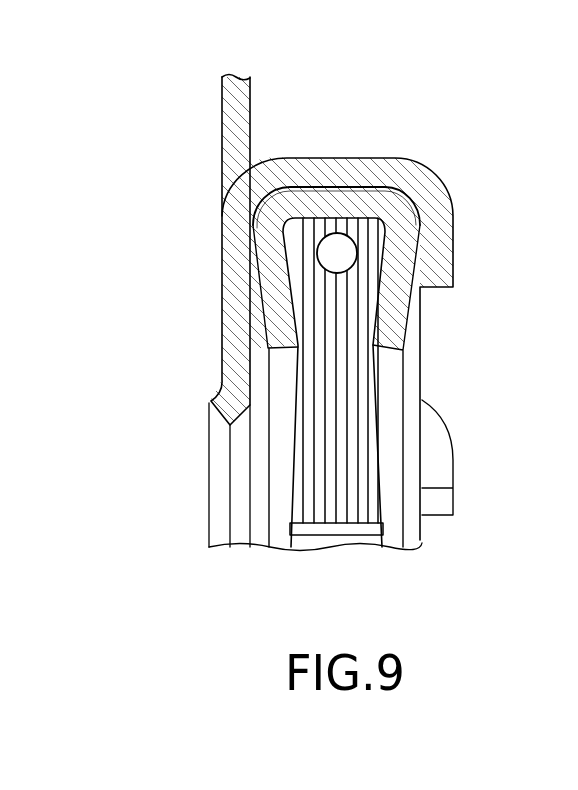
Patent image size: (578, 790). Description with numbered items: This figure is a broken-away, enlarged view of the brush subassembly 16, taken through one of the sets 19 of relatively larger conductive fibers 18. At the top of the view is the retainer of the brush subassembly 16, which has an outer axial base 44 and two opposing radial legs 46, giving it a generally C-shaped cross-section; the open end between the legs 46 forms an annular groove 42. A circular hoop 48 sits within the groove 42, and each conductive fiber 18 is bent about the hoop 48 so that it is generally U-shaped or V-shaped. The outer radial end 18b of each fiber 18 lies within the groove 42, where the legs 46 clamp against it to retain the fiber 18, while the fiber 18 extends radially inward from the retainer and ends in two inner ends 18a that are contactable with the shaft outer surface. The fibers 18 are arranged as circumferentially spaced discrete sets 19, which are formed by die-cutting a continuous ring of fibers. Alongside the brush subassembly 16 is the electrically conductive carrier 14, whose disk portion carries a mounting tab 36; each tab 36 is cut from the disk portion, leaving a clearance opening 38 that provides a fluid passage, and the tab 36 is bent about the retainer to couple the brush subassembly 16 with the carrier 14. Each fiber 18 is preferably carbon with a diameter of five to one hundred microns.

The electrically conductive carrier 14 is at (202, 102).
The brush subassembly 16 is at (492, 216).
The conductive fibers 18 is at (402, 399).
The inner ends 18a is at (377, 518).
The outer radial end 18b is at (310, 228).
The discrete sets of fibers 19 is at (408, 475).
The mounting tab 36 is at (384, 148).
The clearance opening 38 is at (241, 94).
The annular groove 42 is at (341, 352).
The outer axial base 44 is at (343, 197).
The radial legs 46 is at (272, 305).
The circular hoop 48 is at (332, 252).